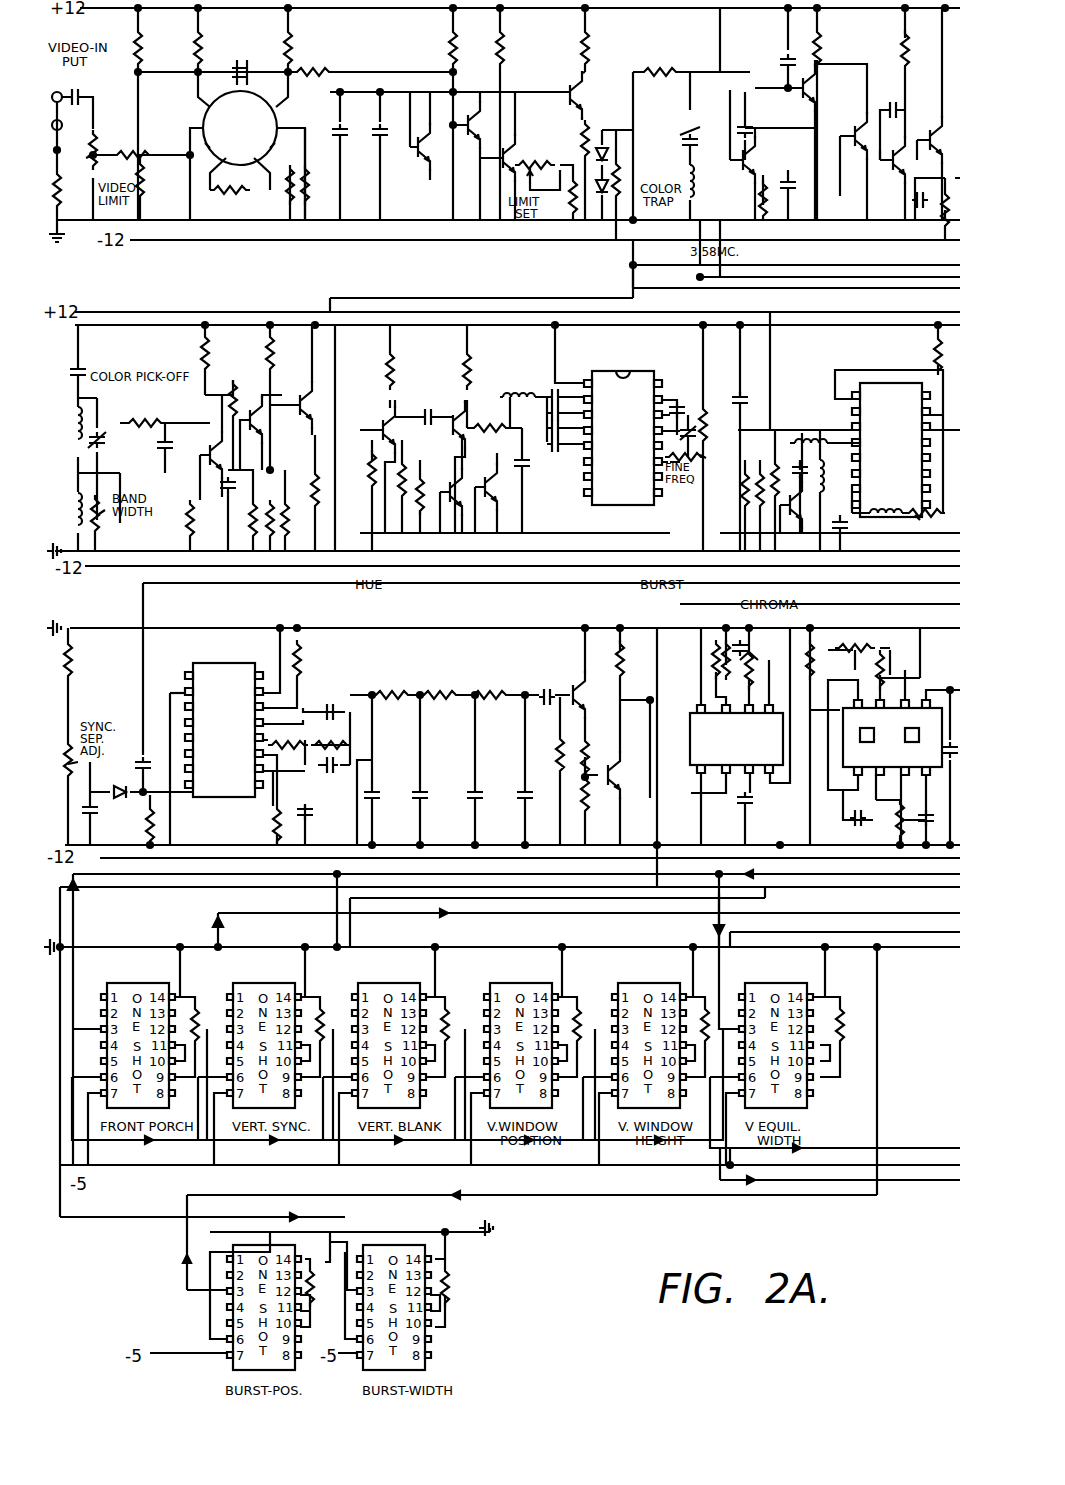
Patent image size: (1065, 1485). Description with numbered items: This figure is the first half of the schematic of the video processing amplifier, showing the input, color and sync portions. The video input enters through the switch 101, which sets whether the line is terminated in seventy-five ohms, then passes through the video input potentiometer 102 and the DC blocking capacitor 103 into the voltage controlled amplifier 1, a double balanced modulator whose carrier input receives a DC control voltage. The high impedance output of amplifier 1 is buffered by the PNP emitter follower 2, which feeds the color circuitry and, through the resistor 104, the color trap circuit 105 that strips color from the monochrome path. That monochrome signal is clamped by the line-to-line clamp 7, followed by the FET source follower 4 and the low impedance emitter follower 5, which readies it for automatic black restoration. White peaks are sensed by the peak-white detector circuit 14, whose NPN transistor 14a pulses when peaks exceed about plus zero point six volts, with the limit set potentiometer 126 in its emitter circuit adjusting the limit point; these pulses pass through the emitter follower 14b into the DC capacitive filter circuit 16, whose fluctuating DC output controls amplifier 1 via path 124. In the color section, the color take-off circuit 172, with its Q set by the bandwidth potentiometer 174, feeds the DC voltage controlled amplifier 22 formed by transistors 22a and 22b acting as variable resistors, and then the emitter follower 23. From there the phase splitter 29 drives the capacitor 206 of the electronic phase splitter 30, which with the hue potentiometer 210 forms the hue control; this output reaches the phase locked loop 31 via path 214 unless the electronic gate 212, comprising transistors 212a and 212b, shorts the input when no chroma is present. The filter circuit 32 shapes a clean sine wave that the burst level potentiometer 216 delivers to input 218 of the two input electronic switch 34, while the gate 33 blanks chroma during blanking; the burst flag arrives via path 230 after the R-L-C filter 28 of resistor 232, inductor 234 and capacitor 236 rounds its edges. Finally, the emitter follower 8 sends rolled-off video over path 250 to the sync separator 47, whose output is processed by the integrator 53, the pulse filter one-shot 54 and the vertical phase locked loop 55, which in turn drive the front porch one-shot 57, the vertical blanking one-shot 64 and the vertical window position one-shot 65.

The voltage controlled amplifier 1 is at (280, 125).
The emitter follower circuit 2 is at (562, 78).
The FET source follower 4 is at (845, 123).
The low impedance emitter follower circuit 5 is at (912, 143).
The line-to-line clamp 7 is at (766, 162).
The emitter follower 8 is at (816, 82).
The peak-white detector circuit 14 is at (480, 112).
The peak-white detector transistor 14a is at (488, 142).
The low impedance emitter follower circuit 14b is at (452, 125).
The DC capacitive filter circuit 16 is at (358, 150).
The DC voltage controlled amplifier 22 is at (186, 431).
The transistor 22a is at (168, 463).
The transistor 22b is at (222, 498).
The emitter follower circuit 23 is at (278, 435).
The R-L-C filter 28 is at (922, 542).
The phase splitter 29 is at (402, 414).
The electronic phase splitter 30 is at (463, 420).
The phase locked loop 31 is at (628, 504).
The filter circuit 32 is at (702, 427).
The electronic switch 33 is at (782, 527).
The two input electronic switch 34 is at (894, 375).
The sync separator 47 is at (207, 805).
The integrator 53 is at (480, 658).
The one-shot multivibrator 54 is at (766, 706).
The vertical phase locked loop 55 is at (920, 685).
The front porch one-shot 57 is at (128, 968).
The vertical blanking one-shot 64 is at (383, 968).
The vertical window position one-shot 65 is at (513, 968).
The switch 101 is at (75, 192).
The video input potentiometer 102 is at (97, 152).
The DC blocking capacitor 103 is at (242, 60).
The resistor 104 is at (670, 69).
The color trap circuit 105 is at (677, 146).
The path 124 is at (338, 66).
The limit set potentiometer 126 is at (548, 160).
The color take-off circuit 172 is at (102, 430).
The bandwidth potentiometer 174 is at (95, 502).
The capacitor 206 is at (435, 398).
The hue potentiometer 210 is at (403, 537).
The electronic gate 212 is at (503, 508).
The transistor 212a is at (464, 522).
The transistor 212b is at (500, 485).
The path 214 is at (545, 408).
The burst level potentiometer 216 is at (730, 532).
The input of electronic switch 218 is at (415, 454).
The path 230 is at (898, 502).
The resistor 232 is at (945, 532).
The inductor 234 is at (885, 524).
The capacitor 236 is at (843, 540).
The path 250 is at (419, 298).